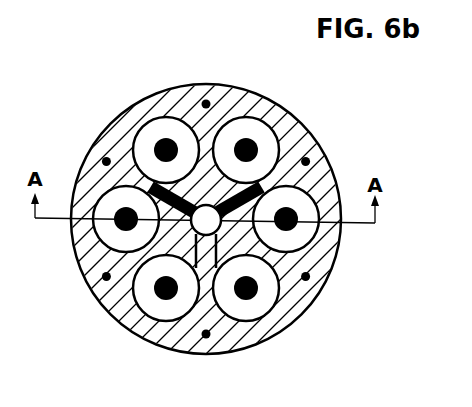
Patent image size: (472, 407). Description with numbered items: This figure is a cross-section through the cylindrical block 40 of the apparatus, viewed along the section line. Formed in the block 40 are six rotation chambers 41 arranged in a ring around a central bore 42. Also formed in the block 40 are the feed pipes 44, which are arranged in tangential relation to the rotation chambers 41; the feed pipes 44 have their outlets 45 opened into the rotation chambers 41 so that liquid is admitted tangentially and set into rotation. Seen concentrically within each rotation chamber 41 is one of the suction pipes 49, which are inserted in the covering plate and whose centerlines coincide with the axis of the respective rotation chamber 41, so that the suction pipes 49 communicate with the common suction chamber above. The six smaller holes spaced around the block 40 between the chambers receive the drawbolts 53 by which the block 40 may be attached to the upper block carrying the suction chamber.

The cylindrical block 40 is at (238, 88).
The rotation chambers 41 is at (272, 148).
The central bore 42 is at (206, 220).
The feed pipes 44 is at (190, 203).
The outlets 45 is at (219, 269).
The suction pipes 49 is at (163, 140).
The drawbolts 53 is at (306, 163).